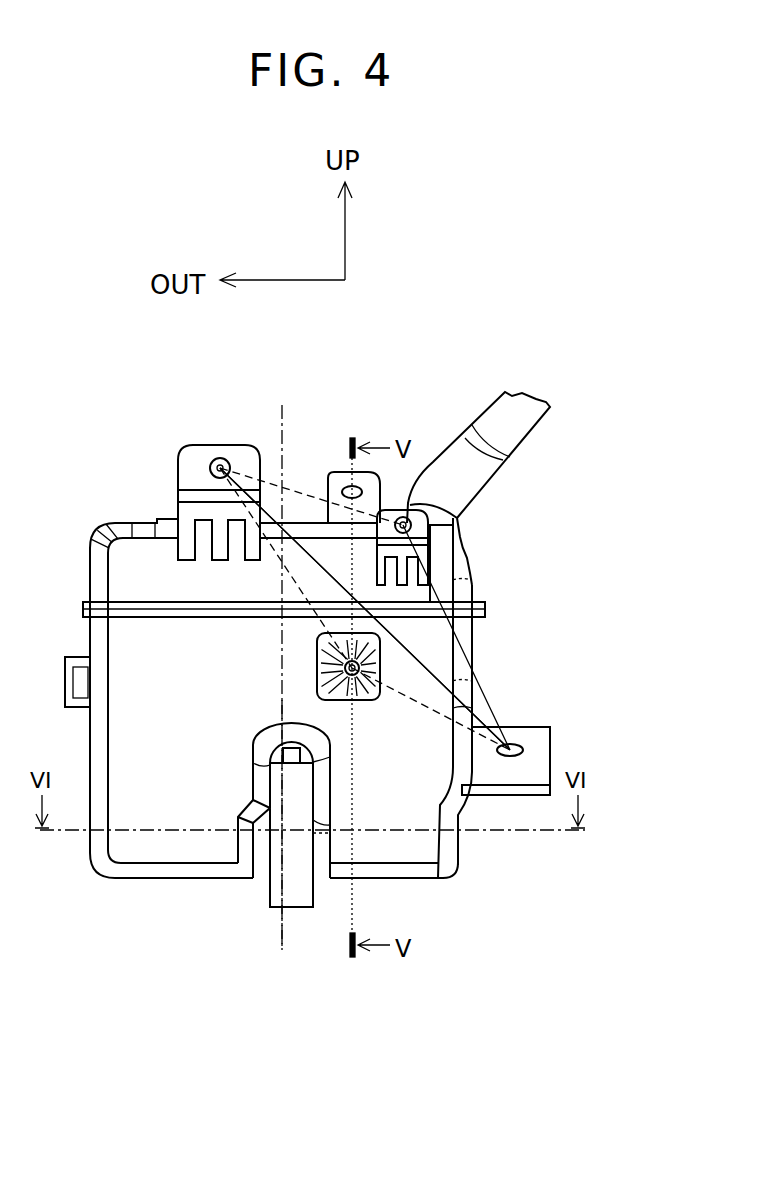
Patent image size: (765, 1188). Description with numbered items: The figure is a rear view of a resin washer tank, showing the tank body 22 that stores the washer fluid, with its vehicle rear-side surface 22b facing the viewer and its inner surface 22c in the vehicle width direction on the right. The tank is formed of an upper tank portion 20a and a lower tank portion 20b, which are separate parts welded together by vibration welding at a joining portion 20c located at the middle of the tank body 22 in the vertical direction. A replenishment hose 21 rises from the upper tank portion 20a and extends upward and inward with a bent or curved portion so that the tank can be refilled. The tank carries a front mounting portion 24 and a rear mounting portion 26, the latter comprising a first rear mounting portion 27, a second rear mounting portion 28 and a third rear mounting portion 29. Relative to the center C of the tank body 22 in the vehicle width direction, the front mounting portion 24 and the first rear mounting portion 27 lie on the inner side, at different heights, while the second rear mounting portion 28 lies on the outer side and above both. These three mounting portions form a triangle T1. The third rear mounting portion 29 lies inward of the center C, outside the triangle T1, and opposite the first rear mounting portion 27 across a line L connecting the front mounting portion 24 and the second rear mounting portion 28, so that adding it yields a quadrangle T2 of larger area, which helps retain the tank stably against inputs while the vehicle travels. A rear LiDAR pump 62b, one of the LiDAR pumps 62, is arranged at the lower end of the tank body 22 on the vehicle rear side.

The replenishment hose 21 is at (520, 433).
The tank body 22 is at (132, 663).
The vehicle rear-side surface 22b is at (135, 850).
The inner surface 22c is at (475, 633).
The upper tank portion 20a is at (120, 568).
The lower tank portion 20b is at (128, 733).
The joining portion 20c is at (152, 612).
The front mounting portion 24 is at (533, 760).
The rear mounting portion 26 is at (324, 598).
The first rear mounting portion 27 is at (448, 518).
The second rear mounting portion 28 is at (200, 458).
The third rear mounting portion 29 is at (358, 677).
The LiDAR pumps 62 is at (305, 872).
The rear LiDAR pump 62b is at (295, 888).
The triangle T1 is at (507, 693).
The quadrangle T2 is at (277, 556).
The line L is at (365, 609).
The center C is at (283, 942).